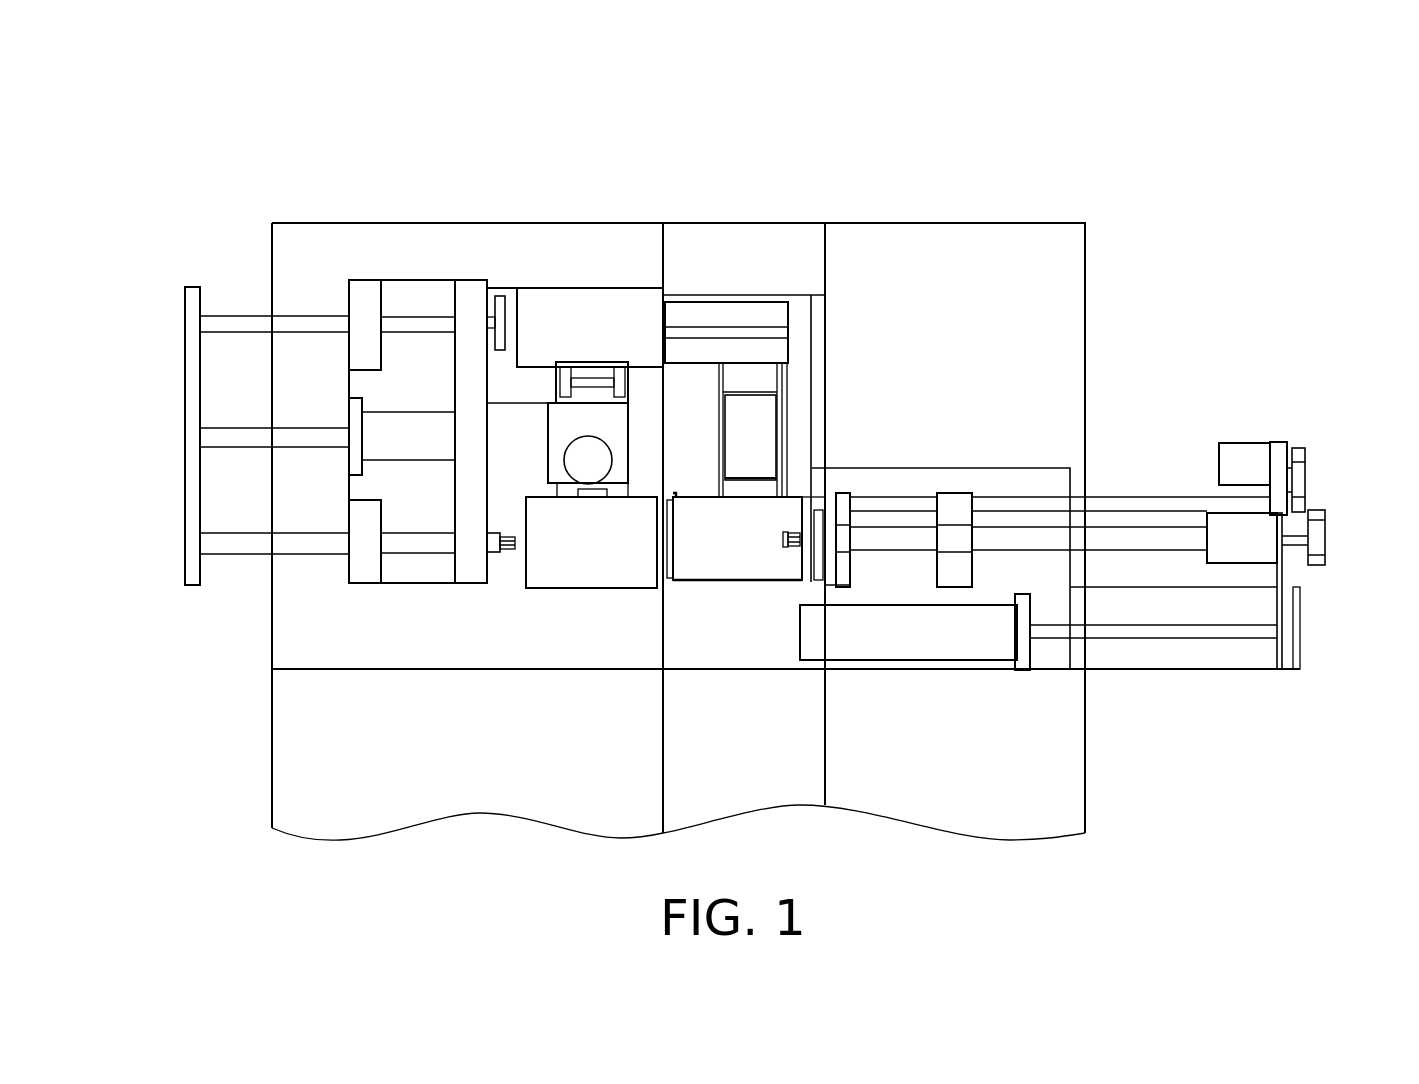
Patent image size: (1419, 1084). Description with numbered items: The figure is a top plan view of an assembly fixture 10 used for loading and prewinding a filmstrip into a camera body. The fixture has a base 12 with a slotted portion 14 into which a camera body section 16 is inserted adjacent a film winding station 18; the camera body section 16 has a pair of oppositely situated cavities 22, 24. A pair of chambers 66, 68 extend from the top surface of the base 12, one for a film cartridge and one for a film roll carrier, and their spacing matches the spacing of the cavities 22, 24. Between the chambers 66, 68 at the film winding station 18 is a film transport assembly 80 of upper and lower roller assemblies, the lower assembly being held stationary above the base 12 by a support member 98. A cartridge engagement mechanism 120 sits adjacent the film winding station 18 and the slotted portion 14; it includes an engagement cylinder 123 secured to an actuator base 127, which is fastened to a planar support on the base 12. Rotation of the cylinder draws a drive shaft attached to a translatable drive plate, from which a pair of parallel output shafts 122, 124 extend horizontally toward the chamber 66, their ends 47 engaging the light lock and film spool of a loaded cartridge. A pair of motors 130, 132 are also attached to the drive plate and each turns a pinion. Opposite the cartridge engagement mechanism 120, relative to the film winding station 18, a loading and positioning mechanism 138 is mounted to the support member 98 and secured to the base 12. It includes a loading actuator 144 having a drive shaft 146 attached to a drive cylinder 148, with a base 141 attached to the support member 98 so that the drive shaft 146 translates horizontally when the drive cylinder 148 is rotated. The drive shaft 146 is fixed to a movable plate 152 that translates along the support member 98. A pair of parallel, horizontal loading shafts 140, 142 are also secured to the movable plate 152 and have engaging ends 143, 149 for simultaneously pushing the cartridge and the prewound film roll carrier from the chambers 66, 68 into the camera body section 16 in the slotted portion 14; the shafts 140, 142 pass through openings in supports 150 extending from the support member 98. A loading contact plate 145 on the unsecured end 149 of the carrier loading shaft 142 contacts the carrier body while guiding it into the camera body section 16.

The assembly fixture 10 is at (280, 188).
The base 12 is at (1085, 750).
The slotted portion 14 is at (825, 722).
The camera body section 16 is at (802, 310).
The film winding station 18 is at (520, 258).
The cavity 22 is at (727, 562).
The cavity 24 is at (737, 293).
The end of output shaft 47 is at (787, 550).
The chamber 66 is at (645, 590).
The chamber 68 is at (645, 302).
The film transport assembly 80 is at (624, 450).
The support member 98 is at (415, 585).
The cartridge engagement mechanism 120 is at (1207, 392).
The output shaft 122 is at (1212, 503).
The engagement cylinder 123 is at (1000, 660).
The output shaft 124 is at (1188, 537).
The actuator base 127 is at (1210, 640).
The motor 130 is at (1270, 555).
The motor 132 is at (1255, 447).
The loading and positioning mechanism 138 is at (170, 447).
The loading shaft 140 is at (410, 310).
The base of loading actuator 141 is at (350, 457).
The loading shaft 142 is at (265, 322).
The engaging end 143 is at (510, 575).
The loading actuator 144 is at (383, 417).
The loading contact plate 145 is at (486, 326).
The drive shaft 146 is at (265, 433).
The drive cylinder 148 is at (383, 457).
The unsecured end 149 is at (492, 298).
The supports 150 is at (352, 298).
The movable plate 152 is at (190, 520).